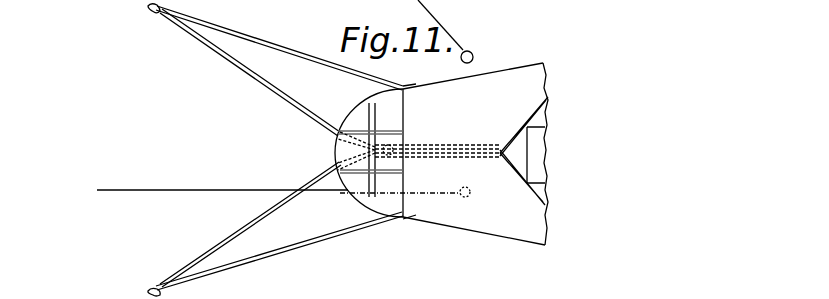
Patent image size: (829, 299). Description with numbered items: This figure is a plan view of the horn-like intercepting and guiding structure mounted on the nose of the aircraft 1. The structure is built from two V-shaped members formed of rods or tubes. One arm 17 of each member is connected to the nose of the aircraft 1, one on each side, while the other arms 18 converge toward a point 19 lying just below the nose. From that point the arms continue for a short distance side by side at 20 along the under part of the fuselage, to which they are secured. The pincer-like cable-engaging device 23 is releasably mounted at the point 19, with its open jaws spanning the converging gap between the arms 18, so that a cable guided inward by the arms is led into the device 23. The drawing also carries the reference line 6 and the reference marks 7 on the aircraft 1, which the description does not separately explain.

The aircraft 1 is at (441, 154).
The axis line 6 is at (178, 191).
The bore / pivot 7 is at (474, 54).
The arm 17 is at (301, 50).
The arms 18 is at (273, 96).
The point 19 is at (376, 150).
The side by side portion 20 is at (455, 146).
The pincer-like cable-engaging device 23 is at (376, 143).